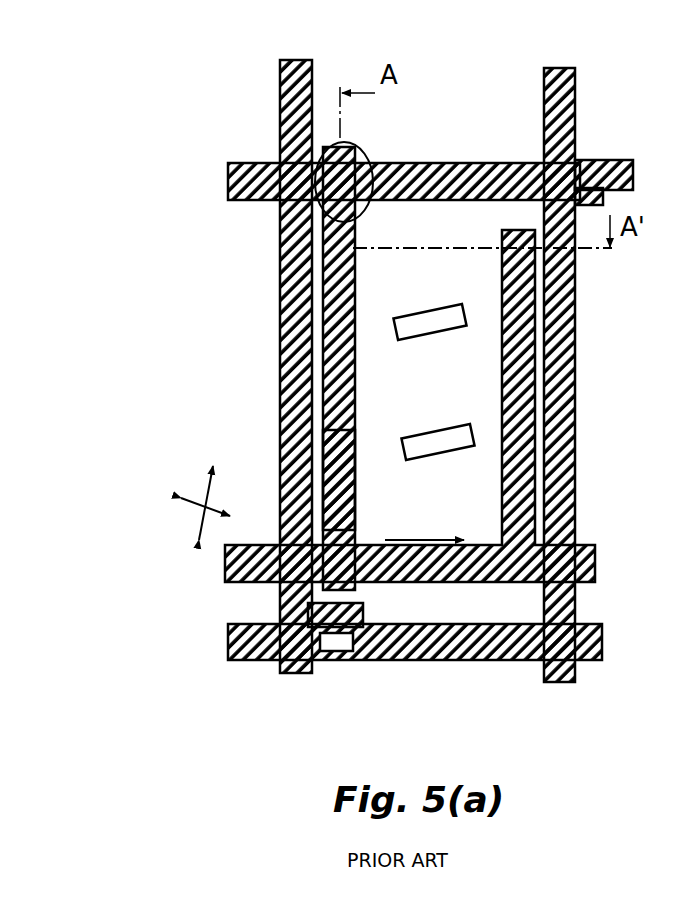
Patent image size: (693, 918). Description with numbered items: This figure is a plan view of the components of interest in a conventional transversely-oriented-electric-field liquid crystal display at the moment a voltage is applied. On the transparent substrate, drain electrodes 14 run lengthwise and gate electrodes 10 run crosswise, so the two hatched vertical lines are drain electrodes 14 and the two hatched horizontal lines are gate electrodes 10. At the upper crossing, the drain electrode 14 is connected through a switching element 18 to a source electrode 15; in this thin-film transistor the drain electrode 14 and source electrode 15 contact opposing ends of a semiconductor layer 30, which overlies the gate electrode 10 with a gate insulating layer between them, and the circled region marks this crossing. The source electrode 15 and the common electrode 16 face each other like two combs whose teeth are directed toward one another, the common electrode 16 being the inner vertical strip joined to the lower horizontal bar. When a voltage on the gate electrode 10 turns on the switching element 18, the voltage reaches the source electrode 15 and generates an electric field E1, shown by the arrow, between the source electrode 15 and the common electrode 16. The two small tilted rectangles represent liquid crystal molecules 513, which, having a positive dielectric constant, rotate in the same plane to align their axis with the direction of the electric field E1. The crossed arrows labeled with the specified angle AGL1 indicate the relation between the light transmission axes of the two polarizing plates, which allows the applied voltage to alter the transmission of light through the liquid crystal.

The gate electrode 10 is at (454, 164).
The drain electrode 14 is at (280, 158).
The source electrode 15 is at (356, 496).
The common electrode 16 is at (588, 548).
The switching element 18 is at (280, 236).
The semiconductor layer 30 is at (364, 165).
The liquid crystal molecules 513 is at (445, 437).
The electric field E1 is at (424, 520).
The specified angle AGL1 is at (194, 520).